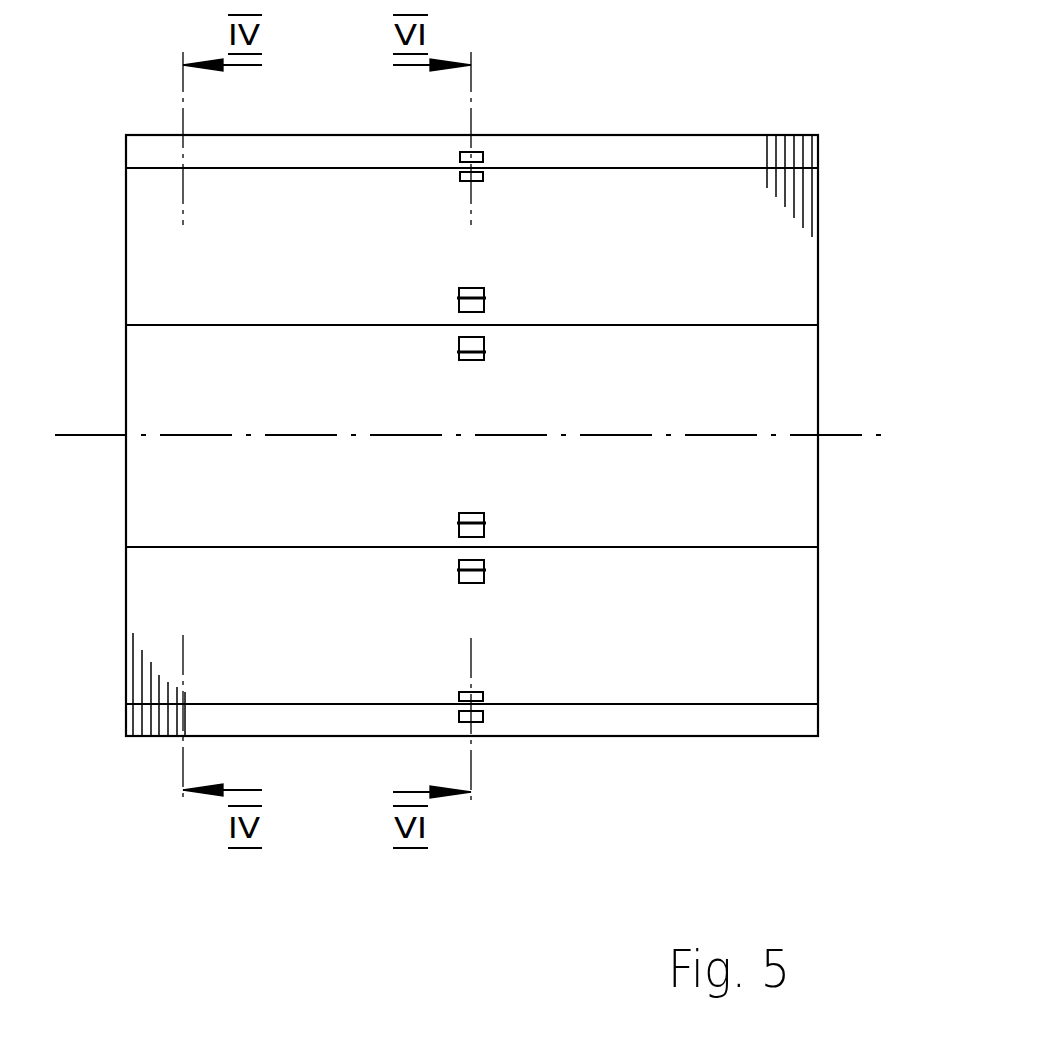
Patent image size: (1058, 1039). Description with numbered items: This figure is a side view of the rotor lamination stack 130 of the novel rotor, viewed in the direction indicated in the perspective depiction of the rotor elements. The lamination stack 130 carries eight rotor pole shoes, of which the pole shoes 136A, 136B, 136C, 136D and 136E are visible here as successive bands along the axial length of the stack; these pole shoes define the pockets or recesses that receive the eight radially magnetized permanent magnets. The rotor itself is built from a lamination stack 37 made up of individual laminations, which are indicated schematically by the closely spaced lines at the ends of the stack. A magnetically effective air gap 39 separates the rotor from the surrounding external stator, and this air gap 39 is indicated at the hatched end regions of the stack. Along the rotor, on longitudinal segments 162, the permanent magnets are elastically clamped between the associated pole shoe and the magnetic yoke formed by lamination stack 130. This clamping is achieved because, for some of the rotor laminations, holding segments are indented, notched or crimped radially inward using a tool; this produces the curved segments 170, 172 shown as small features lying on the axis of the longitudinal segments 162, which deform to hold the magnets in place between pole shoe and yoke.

The lamination stack 130 is at (100, 218).
The rotor pole shoe 136A is at (613, 157).
The rotor pole shoe 136B is at (776, 272).
The rotor pole shoe 136C is at (782, 388).
The rotor pole shoe 136D is at (780, 618).
The rotor pole shoe 136E is at (778, 723).
The lamination stack 37 is at (780, 312).
The air gap 39 is at (782, 148).
The curved segment 170 is at (484, 174).
The curved segment 172 is at (485, 298).
The longitudinal segment 162 is at (512, 808).